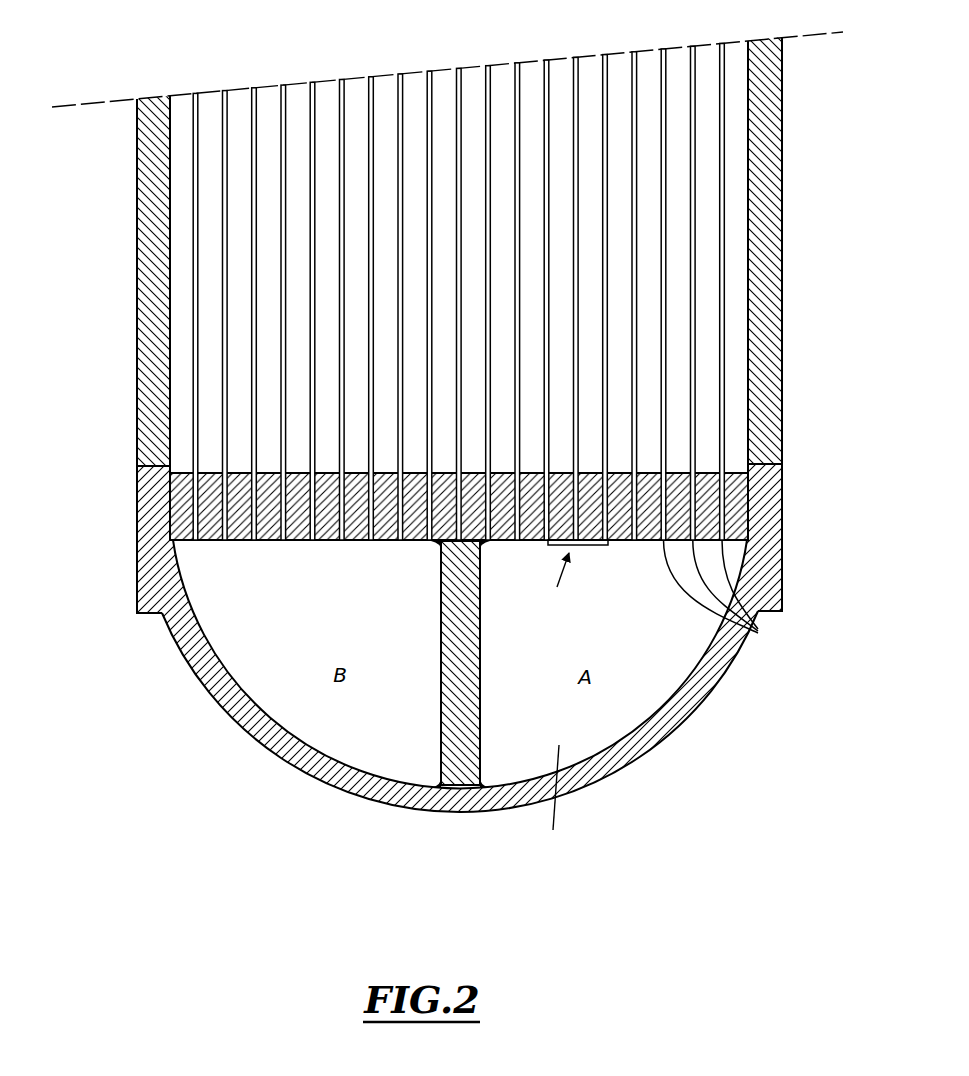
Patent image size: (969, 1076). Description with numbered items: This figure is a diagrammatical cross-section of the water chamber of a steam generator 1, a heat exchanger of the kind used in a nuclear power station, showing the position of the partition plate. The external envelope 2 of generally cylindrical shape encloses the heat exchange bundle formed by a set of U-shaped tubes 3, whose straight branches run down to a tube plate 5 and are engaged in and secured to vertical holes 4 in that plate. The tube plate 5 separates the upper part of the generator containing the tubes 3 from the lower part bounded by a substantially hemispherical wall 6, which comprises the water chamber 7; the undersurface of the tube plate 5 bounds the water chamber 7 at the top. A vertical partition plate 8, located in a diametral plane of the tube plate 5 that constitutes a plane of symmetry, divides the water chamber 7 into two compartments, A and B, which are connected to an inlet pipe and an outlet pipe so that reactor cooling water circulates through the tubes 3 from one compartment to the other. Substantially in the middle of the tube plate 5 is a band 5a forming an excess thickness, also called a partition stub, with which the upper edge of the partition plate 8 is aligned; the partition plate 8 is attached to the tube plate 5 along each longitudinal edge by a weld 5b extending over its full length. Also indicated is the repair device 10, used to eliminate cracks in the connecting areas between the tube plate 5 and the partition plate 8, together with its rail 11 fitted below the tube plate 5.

The steam generator 1 is at (462, 443).
The external envelope 2 is at (766, 227).
The tubes 3 is at (225, 262).
The vertical holes 4 is at (720, 598).
The tube plate 5 is at (183, 503).
The band forming an excess thickness 5a is at (457, 545).
The weld 5b is at (436, 548).
The hemispherical wall 6 is at (665, 728).
The water chamber 7 is at (556, 800).
The partition plate 8 is at (450, 725).
The repair device 10 is at (555, 583).
The rail 11 is at (594, 547).